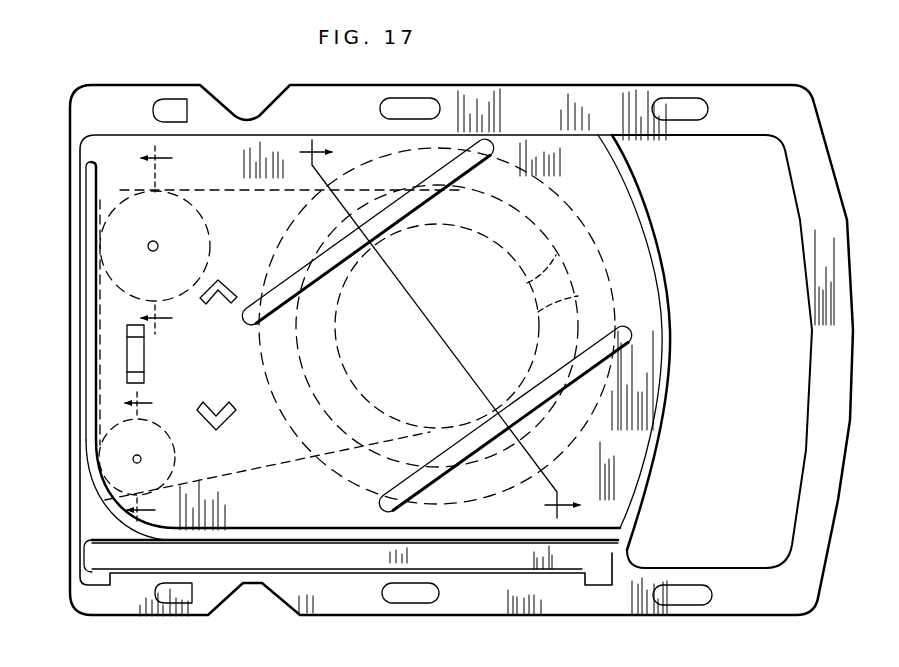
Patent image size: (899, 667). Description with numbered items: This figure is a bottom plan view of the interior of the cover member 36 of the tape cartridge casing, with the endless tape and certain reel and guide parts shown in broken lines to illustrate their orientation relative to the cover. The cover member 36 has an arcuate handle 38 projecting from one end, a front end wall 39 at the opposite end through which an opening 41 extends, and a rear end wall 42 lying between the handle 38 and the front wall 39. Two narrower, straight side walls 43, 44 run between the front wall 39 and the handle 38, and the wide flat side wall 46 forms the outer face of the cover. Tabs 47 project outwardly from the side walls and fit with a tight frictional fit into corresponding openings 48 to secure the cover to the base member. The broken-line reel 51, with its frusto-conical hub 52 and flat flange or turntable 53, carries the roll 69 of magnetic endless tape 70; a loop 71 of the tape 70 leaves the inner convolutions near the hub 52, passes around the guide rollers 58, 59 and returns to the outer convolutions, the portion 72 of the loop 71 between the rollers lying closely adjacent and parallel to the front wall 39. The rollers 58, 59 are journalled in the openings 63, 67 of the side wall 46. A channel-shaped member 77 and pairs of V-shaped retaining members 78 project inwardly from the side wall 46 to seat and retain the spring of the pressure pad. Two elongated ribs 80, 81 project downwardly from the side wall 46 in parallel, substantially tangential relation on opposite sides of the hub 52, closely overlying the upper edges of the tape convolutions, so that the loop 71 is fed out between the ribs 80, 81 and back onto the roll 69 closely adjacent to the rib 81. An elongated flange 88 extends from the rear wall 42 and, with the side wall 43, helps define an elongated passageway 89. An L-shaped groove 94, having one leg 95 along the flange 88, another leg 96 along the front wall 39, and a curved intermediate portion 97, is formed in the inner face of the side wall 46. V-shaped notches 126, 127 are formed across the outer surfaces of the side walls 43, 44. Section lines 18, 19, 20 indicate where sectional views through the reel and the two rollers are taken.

The section line 18- 18 is at (426, 334).
The section line 19- 19 is at (155, 445).
The section line 20- 20 is at (166, 244).
The cover member 36 is at (822, 126).
The handle 38 is at (796, 184).
The front end wall 39 is at (68, 150).
The opening 41 is at (76, 247).
The end wall 42 is at (674, 306).
The side wall 43 is at (327, 612).
The side wall 44 is at (300, 88).
The side wall 46 is at (627, 331).
The tab 47 is at (402, 104).
The opening 48 is at (178, 100).
The reel 51 is at (578, 190).
The hub 52 is at (504, 256).
The flange or turntable 53 is at (538, 310).
The roller 58 is at (172, 455).
The roller 59 is at (212, 240).
The opening 63 is at (140, 458).
The opening 67 is at (156, 243).
The roll 69 is at (528, 283).
The magnetic endless tape 70 is at (292, 463).
The loop 71 is at (228, 482).
The portion of the loop 72 is at (98, 322).
The channel-shaped member 77 is at (127, 336).
The V-shaped retaining member 78 is at (228, 284).
The rib 80 is at (462, 440).
The rib 81 is at (398, 224).
The flange 88 is at (473, 545).
The passageway 89 is at (527, 558).
The groove or channel 94 is at (460, 528).
The leg 95 is at (300, 526).
The leg 96 is at (84, 176).
The intermediate portion 97 is at (88, 472).
The notch 126 is at (258, 608).
The notch 127 is at (245, 98).